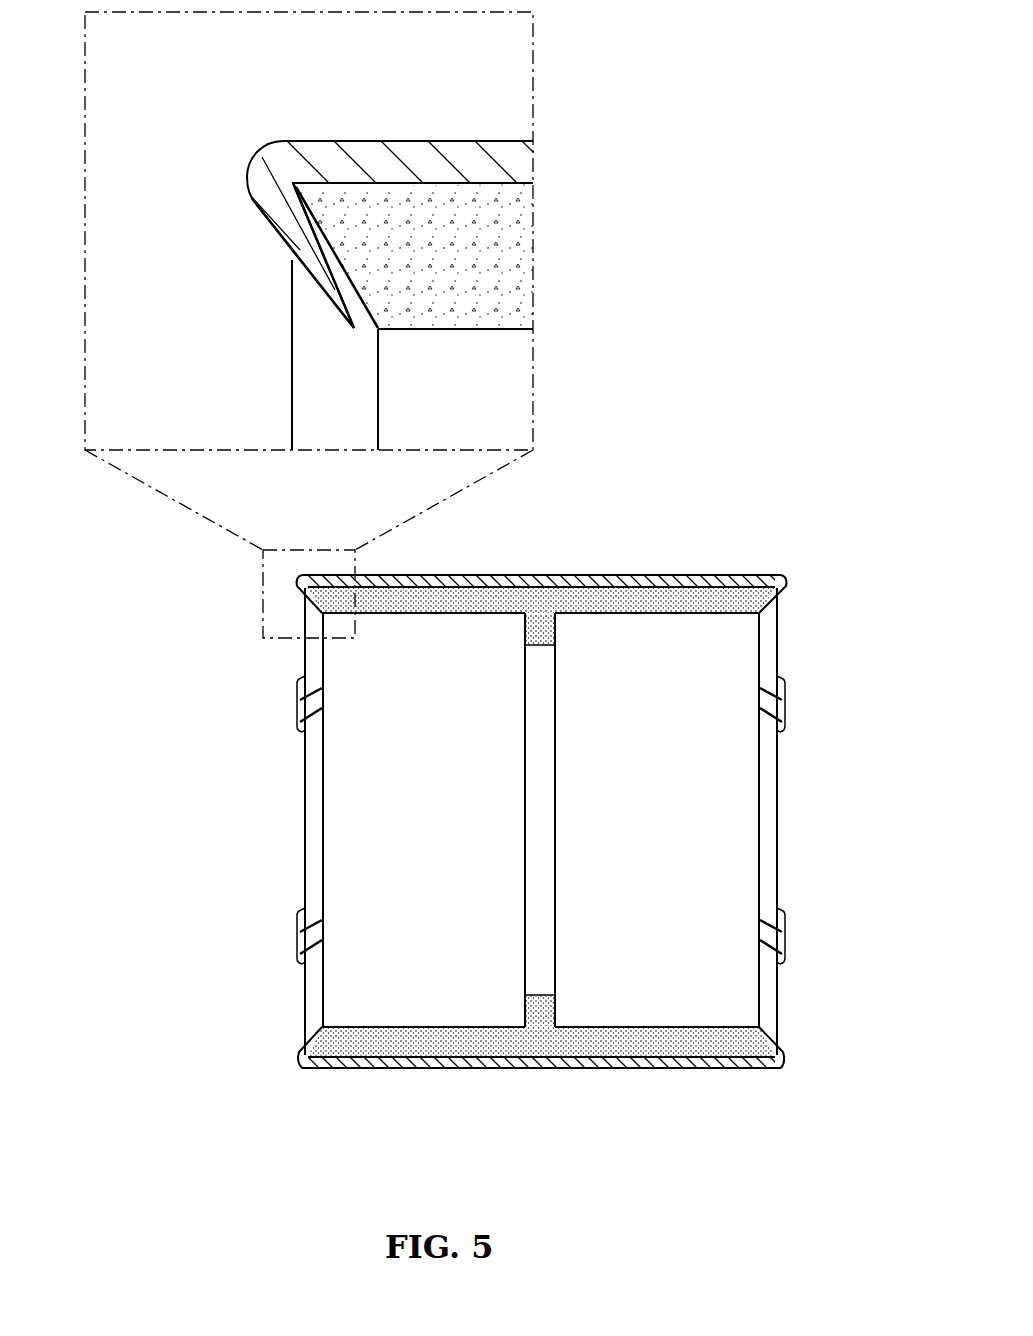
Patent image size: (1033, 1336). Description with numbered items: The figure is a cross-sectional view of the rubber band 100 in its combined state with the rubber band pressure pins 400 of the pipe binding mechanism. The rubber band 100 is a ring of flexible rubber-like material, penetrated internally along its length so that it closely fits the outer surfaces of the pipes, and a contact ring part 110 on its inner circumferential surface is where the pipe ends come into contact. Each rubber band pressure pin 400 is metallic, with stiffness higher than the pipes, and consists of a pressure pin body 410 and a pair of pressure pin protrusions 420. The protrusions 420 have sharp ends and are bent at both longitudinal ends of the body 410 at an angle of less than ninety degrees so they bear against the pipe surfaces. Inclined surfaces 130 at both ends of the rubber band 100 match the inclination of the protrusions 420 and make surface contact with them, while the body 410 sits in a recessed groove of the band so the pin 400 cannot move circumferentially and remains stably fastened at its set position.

The rubber band 100 is at (672, 600).
The contact ring part 110 is at (556, 635).
The inclined surfaces 130 is at (347, 275).
The rubber band pressure pin 400 is at (636, 1071).
The pressure pin body 410 is at (405, 148).
The pressure pin protrusions 420 is at (277, 235).